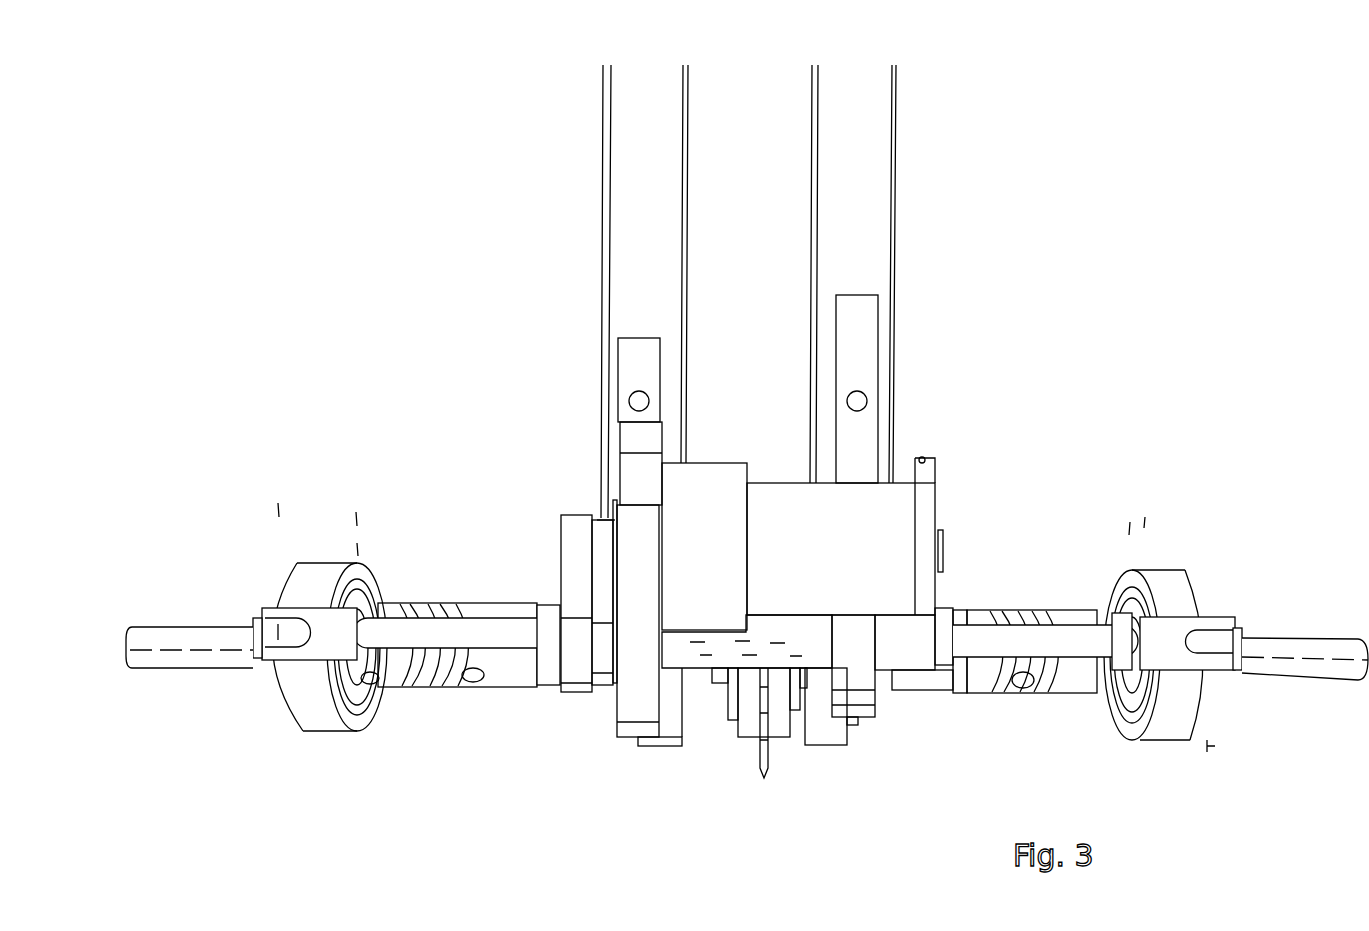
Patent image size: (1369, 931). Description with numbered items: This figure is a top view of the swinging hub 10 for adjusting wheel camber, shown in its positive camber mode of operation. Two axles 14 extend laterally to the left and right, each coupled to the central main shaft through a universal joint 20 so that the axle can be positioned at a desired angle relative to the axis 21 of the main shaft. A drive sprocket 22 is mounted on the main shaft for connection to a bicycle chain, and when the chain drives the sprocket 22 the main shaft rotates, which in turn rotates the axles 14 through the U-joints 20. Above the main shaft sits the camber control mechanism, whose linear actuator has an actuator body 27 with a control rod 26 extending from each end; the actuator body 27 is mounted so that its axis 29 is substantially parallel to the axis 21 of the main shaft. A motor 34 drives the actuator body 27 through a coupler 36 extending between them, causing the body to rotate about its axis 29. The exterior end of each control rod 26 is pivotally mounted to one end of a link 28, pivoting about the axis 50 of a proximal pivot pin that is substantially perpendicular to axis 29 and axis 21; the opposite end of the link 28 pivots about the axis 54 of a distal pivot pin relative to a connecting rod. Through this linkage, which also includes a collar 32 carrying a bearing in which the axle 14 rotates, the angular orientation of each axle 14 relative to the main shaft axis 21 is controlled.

The swinging hub 10 is at (1034, 362).
The axle 14 is at (190, 628).
The universal joint 20 is at (473, 690).
The axis of main shaft 21 is at (84, 652).
The drive sprocket 22 is at (766, 773).
The control rod 26 is at (450, 612).
The actuator body 27 is at (790, 630).
The link 28 is at (292, 606).
The axis of actuator body 29 is at (527, 606).
The collar 32 is at (354, 733).
The motor 34 is at (880, 500).
The coupler 36 is at (566, 514).
The axis of proximal pivot pin 50 is at (360, 515).
The axis of distal pivot pin 54 is at (1250, 780).